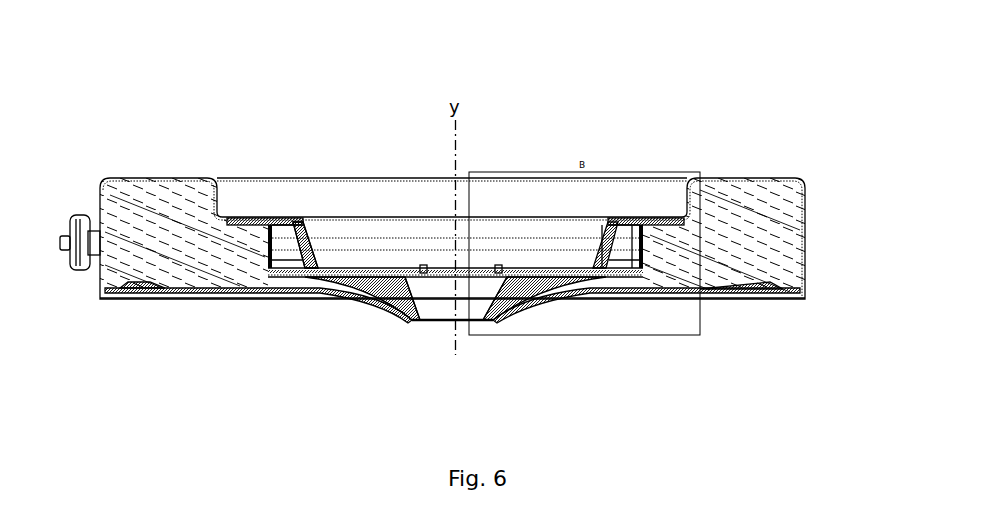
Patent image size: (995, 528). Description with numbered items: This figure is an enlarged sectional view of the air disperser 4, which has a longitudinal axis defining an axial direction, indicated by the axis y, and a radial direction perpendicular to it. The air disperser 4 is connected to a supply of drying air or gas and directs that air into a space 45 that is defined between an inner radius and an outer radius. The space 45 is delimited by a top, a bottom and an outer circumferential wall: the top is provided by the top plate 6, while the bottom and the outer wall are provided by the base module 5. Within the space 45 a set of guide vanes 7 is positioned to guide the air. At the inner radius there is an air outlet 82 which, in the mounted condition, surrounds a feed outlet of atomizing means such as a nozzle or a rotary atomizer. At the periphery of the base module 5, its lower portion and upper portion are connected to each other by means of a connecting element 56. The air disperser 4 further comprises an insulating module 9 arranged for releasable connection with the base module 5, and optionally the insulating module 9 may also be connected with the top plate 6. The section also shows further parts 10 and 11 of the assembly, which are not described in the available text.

The air disperser 4 is at (140, 163).
The base module 5 is at (176, 313).
The top plate 6 is at (303, 222).
The guide vanes 7 is at (295, 224).
The insulating module 9 is at (250, 199).
The plate 10 is at (356, 272).
The bowl shell 11 is at (373, 280).
The space 45 is at (627, 263).
The connecting element 56 is at (100, 282).
The air outlet 82 is at (427, 328).